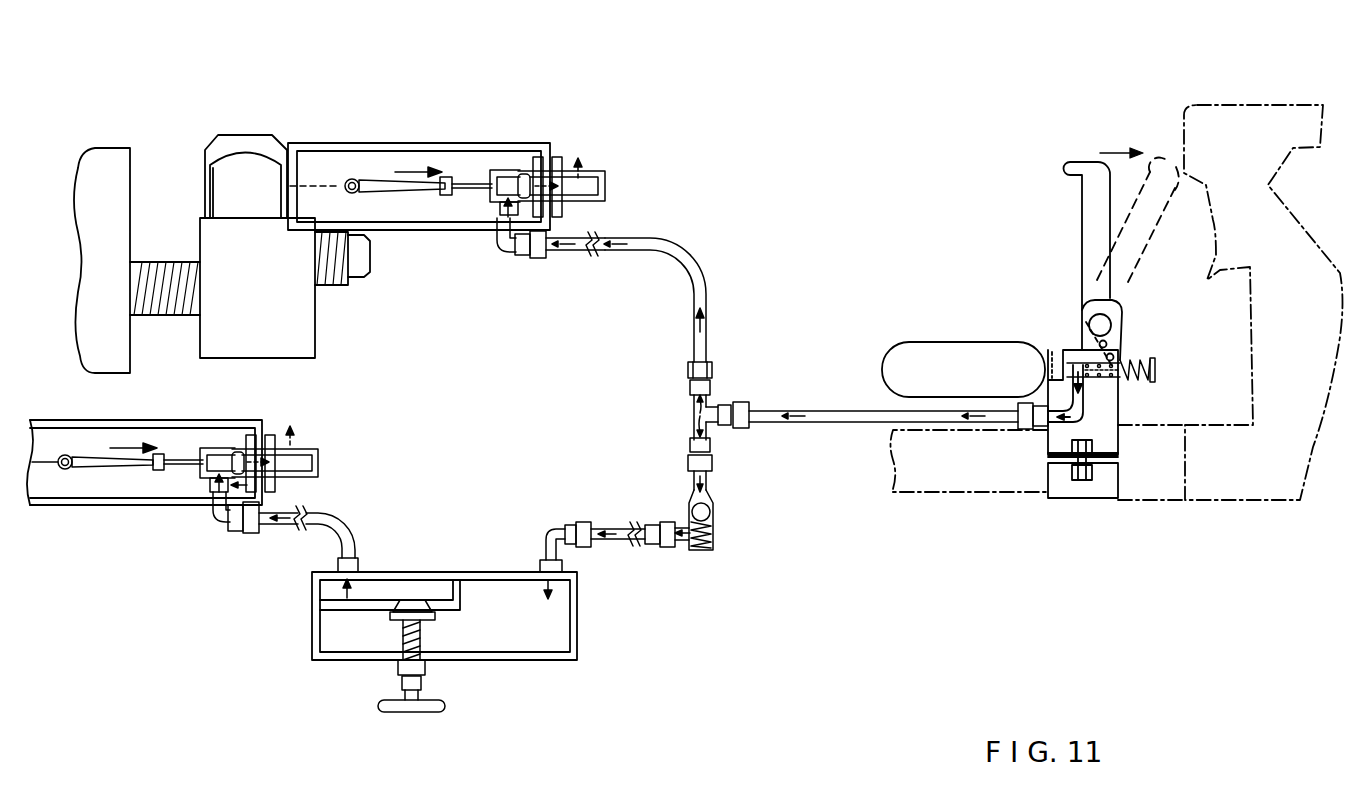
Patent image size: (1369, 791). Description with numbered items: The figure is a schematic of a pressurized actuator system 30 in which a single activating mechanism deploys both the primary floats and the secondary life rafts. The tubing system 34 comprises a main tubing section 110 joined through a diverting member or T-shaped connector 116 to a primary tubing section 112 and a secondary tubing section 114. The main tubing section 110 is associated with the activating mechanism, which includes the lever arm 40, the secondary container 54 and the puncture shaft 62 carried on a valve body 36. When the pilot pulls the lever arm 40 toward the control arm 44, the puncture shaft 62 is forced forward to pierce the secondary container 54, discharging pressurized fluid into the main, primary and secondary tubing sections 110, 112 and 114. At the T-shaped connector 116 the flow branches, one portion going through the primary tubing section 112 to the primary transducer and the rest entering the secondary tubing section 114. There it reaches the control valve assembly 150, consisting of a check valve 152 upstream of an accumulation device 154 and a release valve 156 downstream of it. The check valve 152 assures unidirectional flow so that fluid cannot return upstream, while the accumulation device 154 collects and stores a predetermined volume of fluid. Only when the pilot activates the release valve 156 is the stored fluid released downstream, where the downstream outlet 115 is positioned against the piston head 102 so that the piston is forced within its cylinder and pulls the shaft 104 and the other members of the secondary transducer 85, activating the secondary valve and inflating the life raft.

The seat latch actuator assembly 30 is at (1112, 265).
The tubing system 34 is at (792, 398).
The valve body 36 is at (1119, 415).
The lever arm 40 is at (1085, 163).
The control arm 44 is at (1232, 118).
The secondary container 54 is at (928, 357).
The puncture shaft 62 is at (1068, 355).
The secondary transducer 85 is at (191, 469).
The piston head 102 is at (237, 450).
The shaft 104 is at (160, 472).
The main tubing section 110 is at (805, 423).
The primary tubing section 112 is at (688, 267).
The secondary tubing section 114 is at (548, 530).
The downstream outlet 115 is at (213, 490).
The T-shaped connector 116 is at (712, 402).
The control valve assembly 150 is at (506, 645).
The check valve 152 is at (713, 525).
The accumulation device 154 is at (492, 640).
The release valve 156 is at (385, 703).